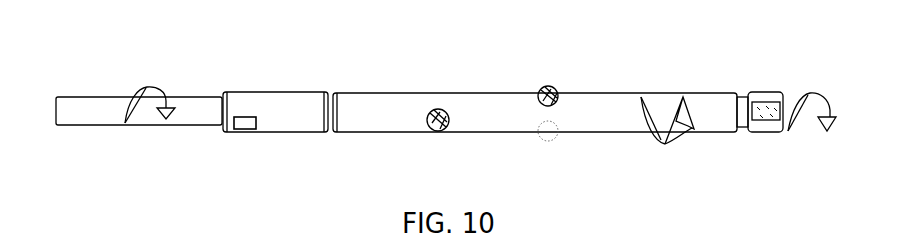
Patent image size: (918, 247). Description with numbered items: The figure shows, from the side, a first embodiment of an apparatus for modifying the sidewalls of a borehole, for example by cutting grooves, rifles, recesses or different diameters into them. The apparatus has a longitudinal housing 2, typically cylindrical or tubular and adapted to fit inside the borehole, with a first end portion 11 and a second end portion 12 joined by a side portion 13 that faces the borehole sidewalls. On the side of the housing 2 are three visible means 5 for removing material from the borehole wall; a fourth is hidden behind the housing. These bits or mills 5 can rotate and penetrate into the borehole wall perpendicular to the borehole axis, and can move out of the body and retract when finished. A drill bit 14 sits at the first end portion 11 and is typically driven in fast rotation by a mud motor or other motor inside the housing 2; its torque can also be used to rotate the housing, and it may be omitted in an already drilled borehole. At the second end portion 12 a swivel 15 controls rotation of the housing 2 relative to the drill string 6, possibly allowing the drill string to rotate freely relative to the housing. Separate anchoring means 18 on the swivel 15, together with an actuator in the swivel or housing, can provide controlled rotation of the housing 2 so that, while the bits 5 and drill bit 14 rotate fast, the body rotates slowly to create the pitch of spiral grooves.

The longitudinal housing 2 is at (477, 93).
The means for removing material 5 is at (438, 132).
The drill string 6 is at (166, 97).
The first end portion 11 is at (738, 92).
The second end portion 12 is at (327, 92).
The side portion 13 is at (595, 92).
The drill bit 14 is at (777, 92).
The swivel 15 is at (277, 110).
The anchoring means 18 is at (245, 127).